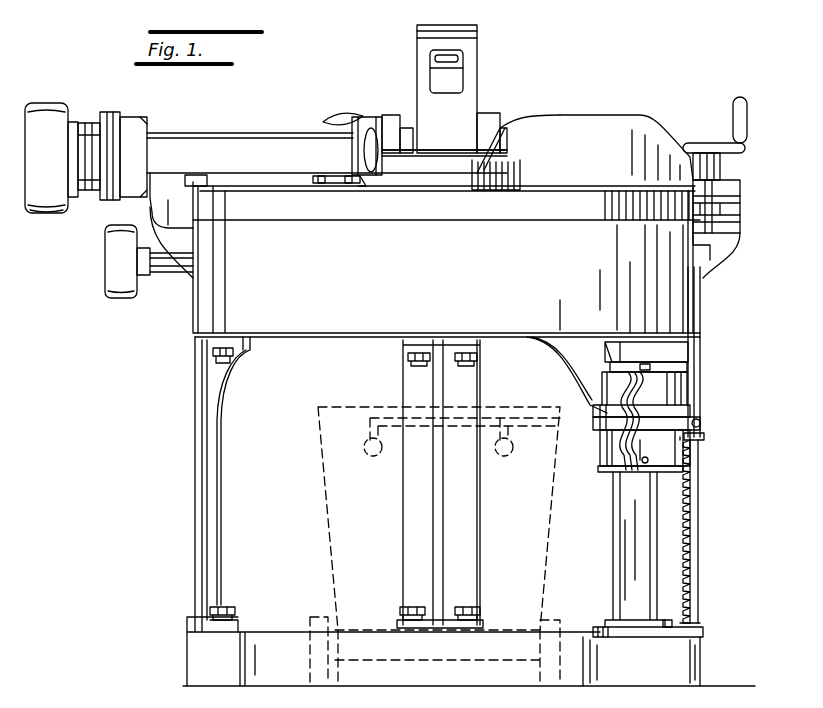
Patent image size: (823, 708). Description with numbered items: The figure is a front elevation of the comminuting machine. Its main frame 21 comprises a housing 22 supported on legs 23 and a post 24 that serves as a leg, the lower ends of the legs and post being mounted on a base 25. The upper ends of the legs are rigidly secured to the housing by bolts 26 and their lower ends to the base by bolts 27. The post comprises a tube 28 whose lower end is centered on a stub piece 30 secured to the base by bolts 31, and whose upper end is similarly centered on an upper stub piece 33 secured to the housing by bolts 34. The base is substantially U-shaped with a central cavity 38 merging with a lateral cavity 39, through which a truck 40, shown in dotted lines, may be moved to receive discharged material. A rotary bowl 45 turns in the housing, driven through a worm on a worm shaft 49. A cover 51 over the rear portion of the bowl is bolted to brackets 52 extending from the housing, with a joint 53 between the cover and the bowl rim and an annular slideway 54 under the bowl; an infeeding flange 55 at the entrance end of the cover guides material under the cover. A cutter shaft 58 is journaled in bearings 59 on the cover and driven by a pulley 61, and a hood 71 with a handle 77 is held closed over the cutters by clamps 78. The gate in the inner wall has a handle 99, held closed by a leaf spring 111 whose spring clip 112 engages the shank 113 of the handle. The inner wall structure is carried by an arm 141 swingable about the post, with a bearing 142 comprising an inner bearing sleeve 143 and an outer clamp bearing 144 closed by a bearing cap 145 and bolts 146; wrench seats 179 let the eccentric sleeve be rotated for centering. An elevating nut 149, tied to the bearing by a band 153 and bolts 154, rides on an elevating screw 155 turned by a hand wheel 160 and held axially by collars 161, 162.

The main frame 21 is at (690, 310).
The housing 22 is at (673, 278).
The legs 23 is at (210, 457).
The post 24 is at (681, 548).
The base 25 is at (690, 664).
The bolts 26 is at (237, 355).
The bolts 27 is at (228, 612).
The tube 28 is at (630, 532).
The stub piece 30 is at (692, 635).
The bolts 31 is at (667, 630).
The upper stub piece 33 is at (695, 352).
The bolts 34 is at (695, 374).
The central cavity 38 is at (362, 648).
The lateral cavity 39 is at (580, 677).
The truck 40 is at (325, 502).
The rotary bowl 45 is at (605, 192).
The worm shaft 49 is at (172, 270).
The cover 51 is at (262, 177).
The brackets 52 is at (175, 234).
The joint 53 is at (190, 176).
The annular slideway 54 is at (677, 240).
The infeeding flange 55 is at (623, 130).
The cutter shaft 58 is at (78, 143).
The bearings 59 is at (128, 126).
The driving pulley 61 is at (46, 113).
The hood 71 is at (472, 47).
The handle 77 is at (460, 64).
The clamps 78 is at (522, 123).
The handle 99 is at (368, 133).
The leaf spring 111 is at (338, 178).
The spring clip 112 is at (358, 182).
The shank 113 is at (368, 182).
The arm 141 is at (565, 362).
The bearing 142 is at (650, 473).
The inner bearing sleeve 143 is at (607, 357).
The outer clamp bearing 144 is at (610, 453).
The bearing cap 145 is at (700, 455).
The bolts 146 is at (630, 472).
The elevating nut 149 is at (706, 426).
The band 153 is at (596, 420).
The bolts 154 is at (708, 436).
The elevating screw 155 is at (700, 505).
The hand wheel 160 is at (720, 147).
The collar 161 is at (712, 172).
The collar 162 is at (735, 208).
The seats 179 is at (642, 364).